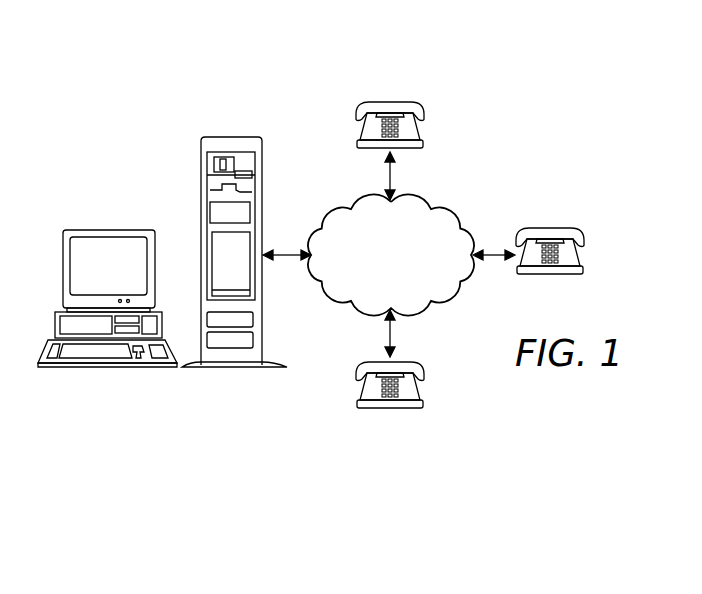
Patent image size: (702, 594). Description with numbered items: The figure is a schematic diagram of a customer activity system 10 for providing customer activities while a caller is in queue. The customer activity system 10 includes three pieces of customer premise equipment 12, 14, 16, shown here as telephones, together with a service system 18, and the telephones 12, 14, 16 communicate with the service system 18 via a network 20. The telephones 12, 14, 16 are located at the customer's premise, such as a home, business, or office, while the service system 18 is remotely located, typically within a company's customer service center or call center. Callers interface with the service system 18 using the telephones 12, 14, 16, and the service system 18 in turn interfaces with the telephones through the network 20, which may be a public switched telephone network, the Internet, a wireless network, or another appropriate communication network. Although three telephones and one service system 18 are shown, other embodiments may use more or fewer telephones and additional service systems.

The customer activity system 10 is at (194, 97).
The customer premise equipment 12 is at (397, 100).
The customer premise equipment 14 is at (553, 226).
The customer premise equipment 16 is at (397, 410).
The service system 18 is at (292, 377).
The network 20 is at (404, 270).